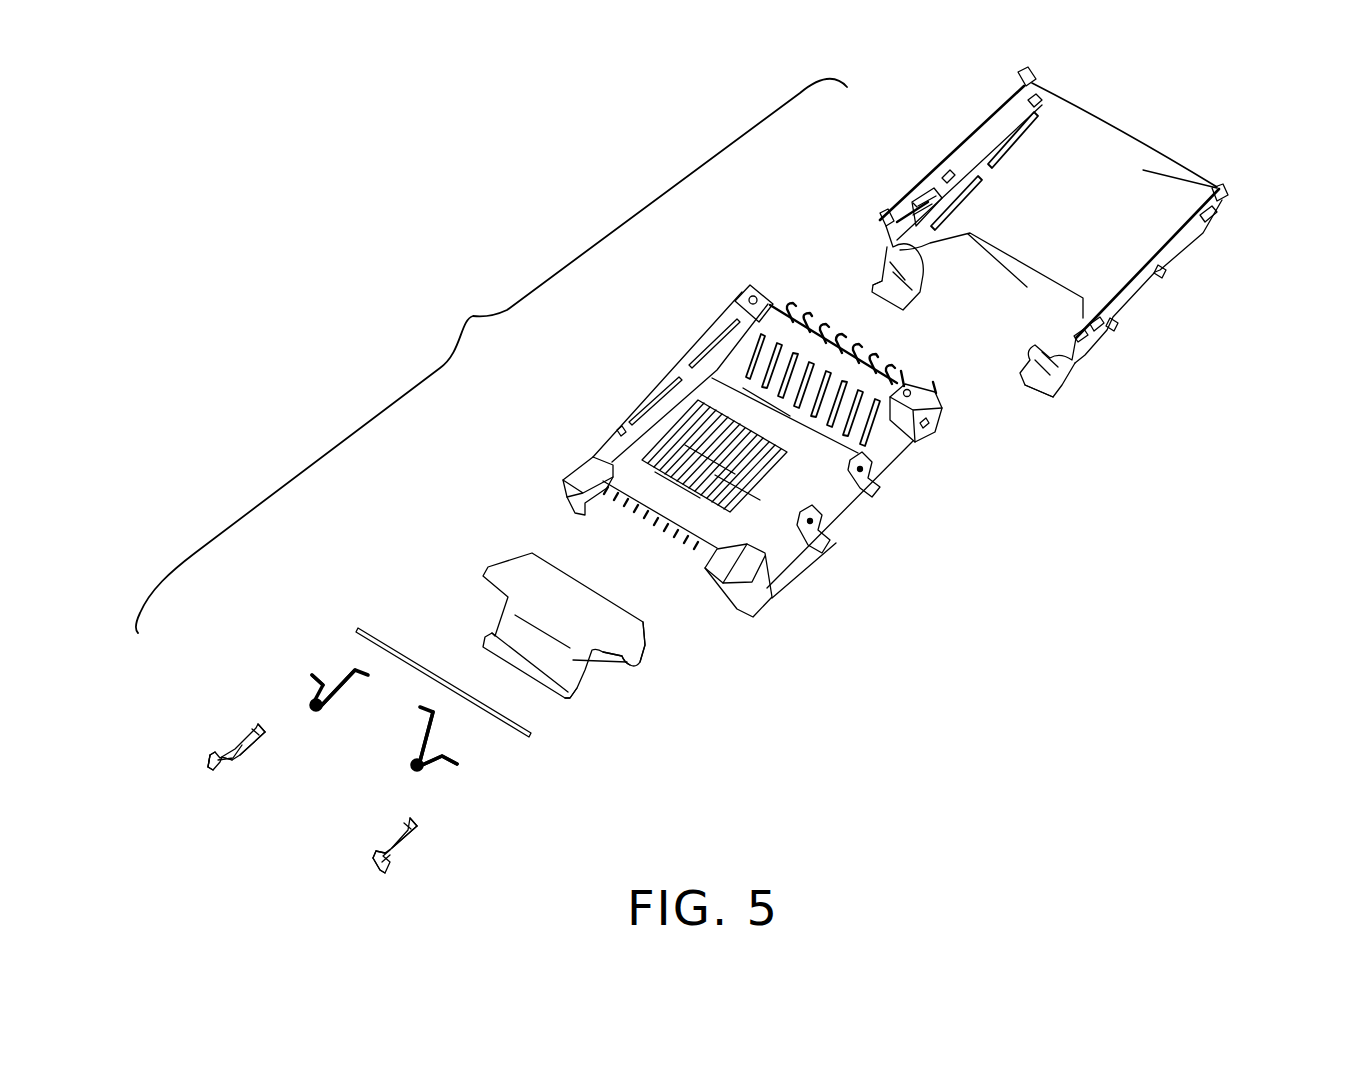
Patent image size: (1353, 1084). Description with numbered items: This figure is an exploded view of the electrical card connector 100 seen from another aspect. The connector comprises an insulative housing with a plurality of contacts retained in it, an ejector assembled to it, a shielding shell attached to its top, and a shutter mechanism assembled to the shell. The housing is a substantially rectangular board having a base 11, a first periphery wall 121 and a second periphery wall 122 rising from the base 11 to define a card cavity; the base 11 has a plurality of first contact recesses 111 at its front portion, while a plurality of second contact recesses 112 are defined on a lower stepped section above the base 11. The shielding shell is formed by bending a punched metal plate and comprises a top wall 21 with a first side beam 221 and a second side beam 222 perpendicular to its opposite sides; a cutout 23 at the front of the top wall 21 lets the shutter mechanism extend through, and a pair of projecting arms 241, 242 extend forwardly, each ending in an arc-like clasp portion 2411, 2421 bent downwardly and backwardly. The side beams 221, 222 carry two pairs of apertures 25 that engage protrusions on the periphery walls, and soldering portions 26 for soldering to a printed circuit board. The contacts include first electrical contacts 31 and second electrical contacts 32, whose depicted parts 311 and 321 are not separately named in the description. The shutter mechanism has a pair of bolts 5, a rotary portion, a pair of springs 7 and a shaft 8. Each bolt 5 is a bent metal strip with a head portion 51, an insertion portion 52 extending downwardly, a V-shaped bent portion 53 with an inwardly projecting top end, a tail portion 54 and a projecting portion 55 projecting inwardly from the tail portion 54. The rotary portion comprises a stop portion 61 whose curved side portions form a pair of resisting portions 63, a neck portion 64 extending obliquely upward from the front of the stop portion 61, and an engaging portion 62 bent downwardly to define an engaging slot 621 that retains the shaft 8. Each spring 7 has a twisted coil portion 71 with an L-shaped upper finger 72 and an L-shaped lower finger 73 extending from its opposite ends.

The electrical card connector 100 is at (491, 356).
The base 11 is at (727, 396).
The first contact recesses 111 is at (693, 434).
The second contact recesses 112 is at (795, 410).
The first periphery wall 121 is at (592, 481).
The second periphery wall 122 is at (762, 594).
The top wall 21 is at (1043, 275).
The first side beam 221 is at (965, 152).
The second side beam 222 is at (1157, 283).
The cutout 23 is at (947, 213).
The apertures 25 is at (1040, 102).
The soldering portions 26 is at (1018, 80).
The projecting arm 241 is at (905, 288).
The arc-like clasp portion 2411 is at (872, 288).
The projecting arm 242 is at (1017, 348).
The arc-like clasp portion 2421 is at (1037, 388).
The first electrical contacts 31 is at (785, 426).
The solder tails 311 is at (670, 538).
The contact portions 321 is at (797, 299).
The second electrical contacts 32 is at (860, 397).
The stop portion 61 is at (560, 602).
The engaging portion 62 is at (520, 673).
The resisting portions 63 is at (633, 644).
The neck portion 64 is at (627, 665).
The engaging slot 621 is at (577, 694).
The shaft 8 is at (527, 733).
The springs 7 is at (318, 712).
The twisted coil portion 71 is at (425, 762).
The L-shaped upper finger 72 is at (342, 687).
The L-shaped lower finger 73 is at (314, 696).
The bolts 5 is at (248, 756).
The head portion 51 is at (213, 774).
The insertion portion 52 is at (208, 762).
The V-shaped bent portion 53 is at (244, 766).
The tail portion 54 is at (243, 742).
The projecting portion 55 is at (257, 724).